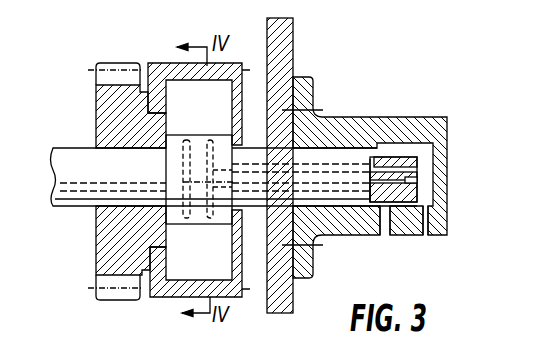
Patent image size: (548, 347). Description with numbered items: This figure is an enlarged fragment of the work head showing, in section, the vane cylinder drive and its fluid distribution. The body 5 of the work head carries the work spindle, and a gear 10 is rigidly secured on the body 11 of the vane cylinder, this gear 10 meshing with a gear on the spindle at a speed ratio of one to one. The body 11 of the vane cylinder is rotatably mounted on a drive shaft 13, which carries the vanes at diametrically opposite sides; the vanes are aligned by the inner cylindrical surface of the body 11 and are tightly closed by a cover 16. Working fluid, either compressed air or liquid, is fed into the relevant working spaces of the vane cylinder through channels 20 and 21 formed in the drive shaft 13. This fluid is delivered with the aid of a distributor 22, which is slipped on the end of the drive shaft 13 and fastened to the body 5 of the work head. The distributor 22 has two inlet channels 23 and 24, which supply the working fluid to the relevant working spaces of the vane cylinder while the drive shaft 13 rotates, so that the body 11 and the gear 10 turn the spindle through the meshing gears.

The body 5 is at (283, 47).
The gear 10 is at (102, 300).
The body of the vane cylinder 11 is at (156, 291).
The drive shaft 13 is at (72, 200).
The cover 16 is at (237, 120).
The channel 20 is at (418, 167).
The channel 21 is at (372, 158).
The distributor 22 is at (328, 230).
The inlet channel 23 is at (426, 235).
The inlet channel 24 is at (385, 235).